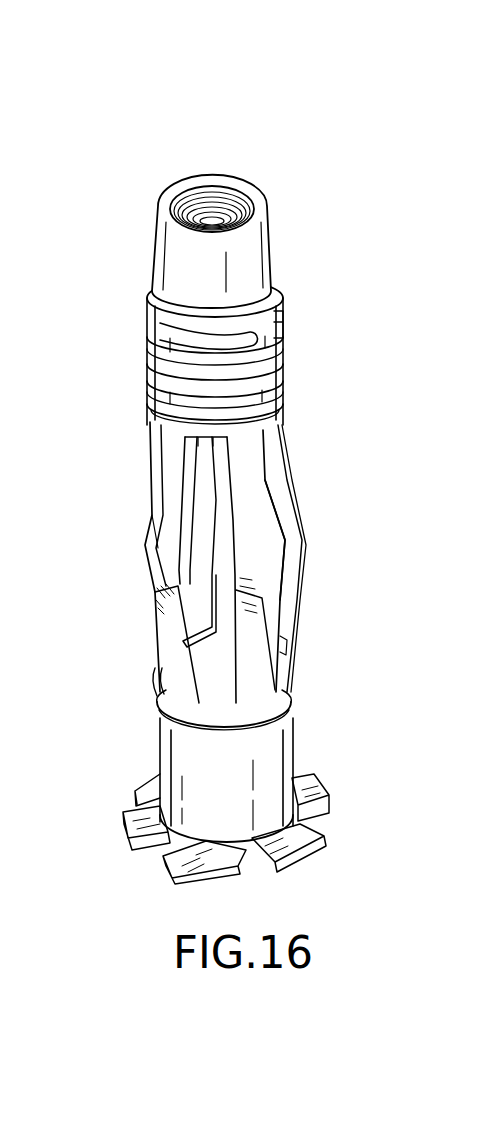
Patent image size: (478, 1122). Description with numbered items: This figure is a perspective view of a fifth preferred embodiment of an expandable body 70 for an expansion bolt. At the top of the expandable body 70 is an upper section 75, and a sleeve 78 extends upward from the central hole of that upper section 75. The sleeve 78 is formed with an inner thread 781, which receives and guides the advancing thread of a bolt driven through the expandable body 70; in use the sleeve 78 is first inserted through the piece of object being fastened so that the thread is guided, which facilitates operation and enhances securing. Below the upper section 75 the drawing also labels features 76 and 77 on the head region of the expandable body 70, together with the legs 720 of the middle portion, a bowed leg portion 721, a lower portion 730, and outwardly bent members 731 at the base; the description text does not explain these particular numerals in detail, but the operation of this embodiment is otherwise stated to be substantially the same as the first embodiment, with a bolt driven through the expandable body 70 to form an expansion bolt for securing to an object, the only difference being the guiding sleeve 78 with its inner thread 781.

The expandable body 70 is at (226, 491).
The upper section 75 is at (282, 290).
The slot 76 is at (158, 343).
The annular groove ring 77 is at (287, 333).
The sleeve 78 is at (157, 262).
The inner thread 781 is at (211, 197).
The expansion legs 720 is at (300, 562).
The bowed leg section 721 is at (312, 533).
The lower sleeve 730 is at (297, 740).
The radial fins 731 is at (307, 845).